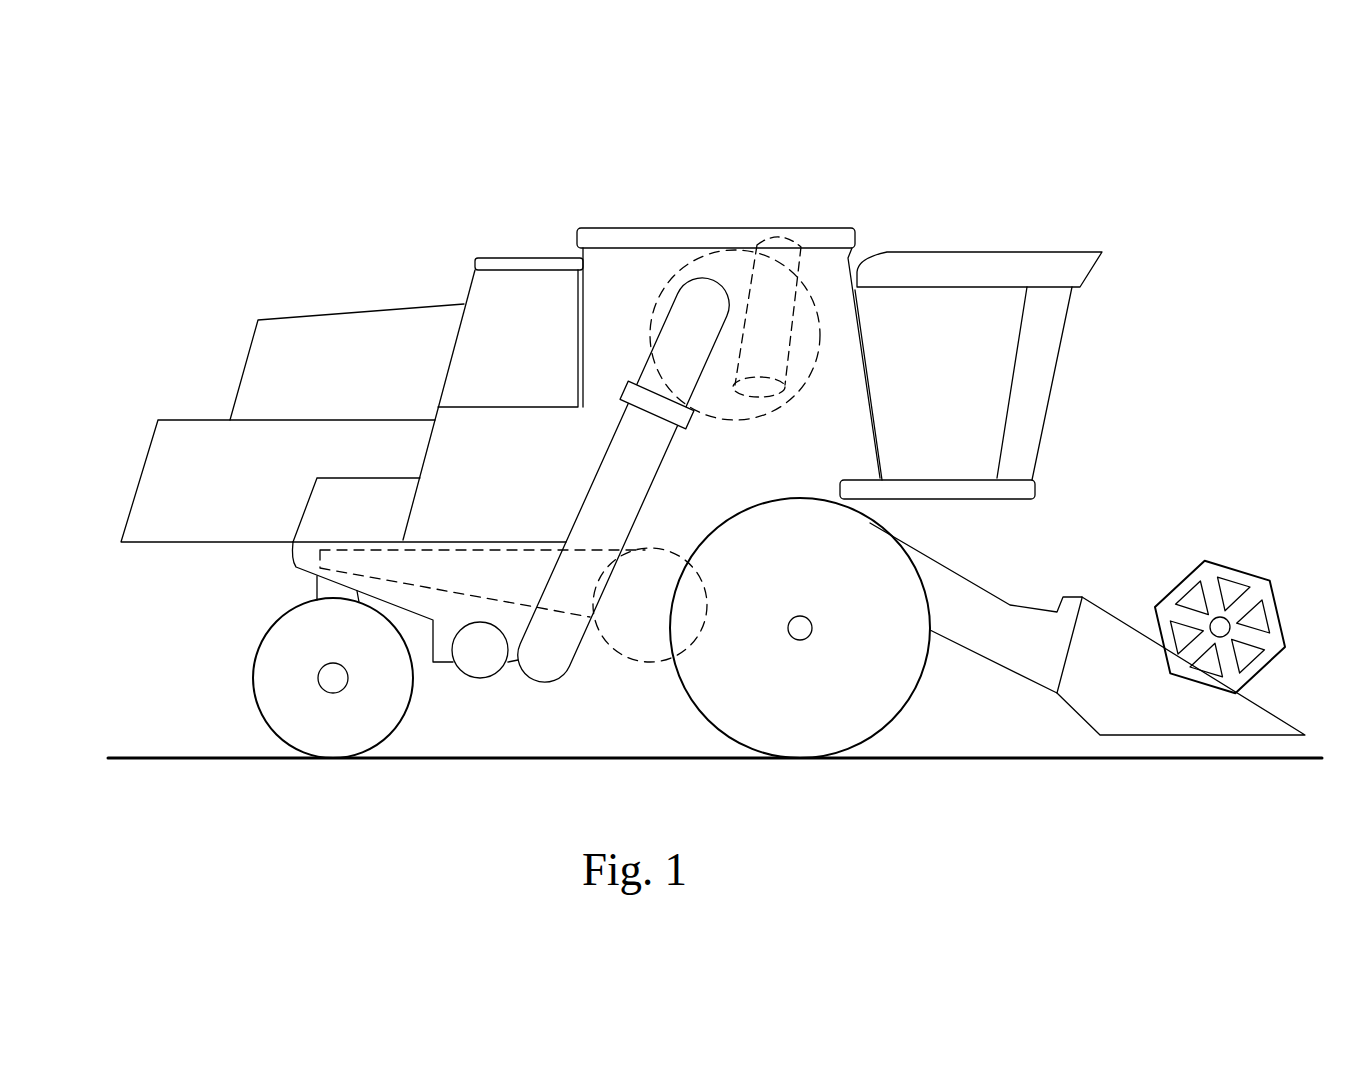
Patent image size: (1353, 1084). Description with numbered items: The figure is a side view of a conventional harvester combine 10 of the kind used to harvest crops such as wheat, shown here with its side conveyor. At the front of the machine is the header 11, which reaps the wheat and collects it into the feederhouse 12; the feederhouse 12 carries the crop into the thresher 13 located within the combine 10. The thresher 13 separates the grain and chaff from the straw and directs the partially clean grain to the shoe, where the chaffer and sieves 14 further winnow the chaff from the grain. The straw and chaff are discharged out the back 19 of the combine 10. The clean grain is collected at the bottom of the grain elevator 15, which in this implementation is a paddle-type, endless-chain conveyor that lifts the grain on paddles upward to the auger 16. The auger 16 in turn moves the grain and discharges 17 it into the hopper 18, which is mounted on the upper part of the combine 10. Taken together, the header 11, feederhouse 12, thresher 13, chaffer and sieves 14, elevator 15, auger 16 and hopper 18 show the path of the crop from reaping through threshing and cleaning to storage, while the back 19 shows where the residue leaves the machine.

The harvester combine 10 is at (1071, 190).
The header 11 is at (1110, 645).
The feederhouse 12 is at (970, 580).
The thresher 13 is at (648, 607).
The chaffer and sieves 14 is at (387, 567).
The grain elevator 15 is at (632, 437).
The auger 16 is at (800, 270).
The discharge 17 is at (782, 237).
The hopper 18 is at (648, 227).
The back 19 is at (145, 450).